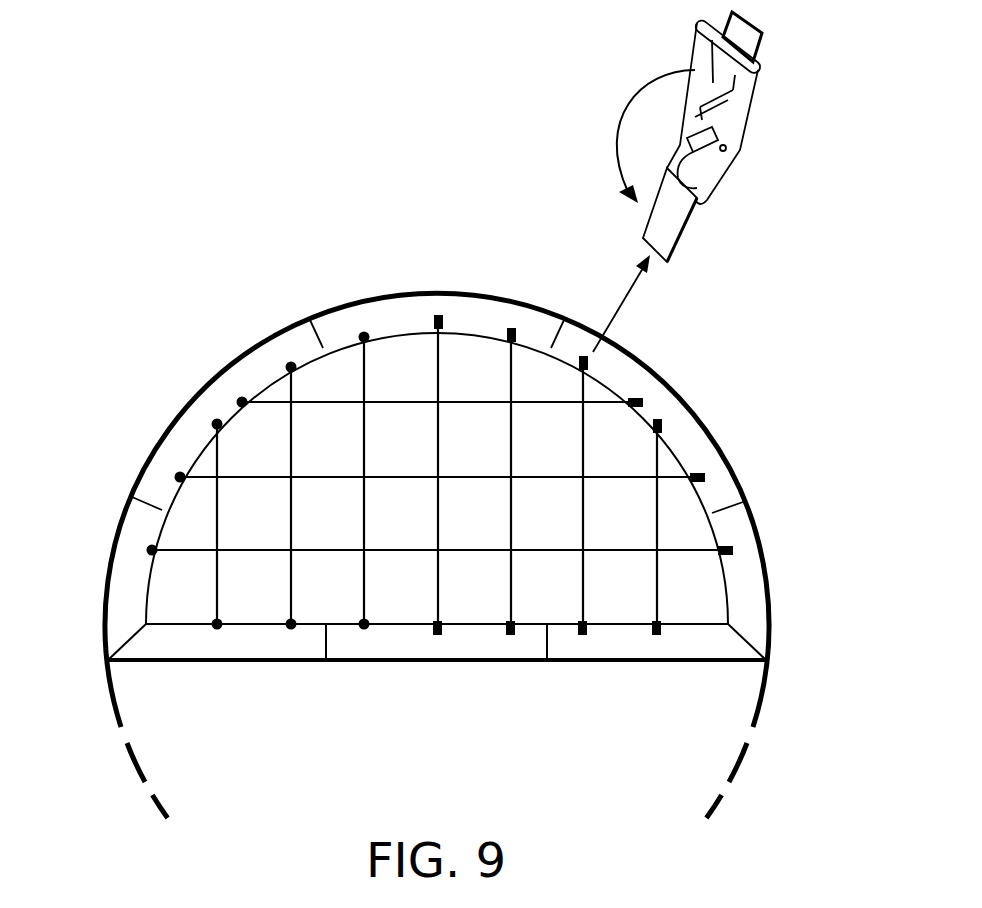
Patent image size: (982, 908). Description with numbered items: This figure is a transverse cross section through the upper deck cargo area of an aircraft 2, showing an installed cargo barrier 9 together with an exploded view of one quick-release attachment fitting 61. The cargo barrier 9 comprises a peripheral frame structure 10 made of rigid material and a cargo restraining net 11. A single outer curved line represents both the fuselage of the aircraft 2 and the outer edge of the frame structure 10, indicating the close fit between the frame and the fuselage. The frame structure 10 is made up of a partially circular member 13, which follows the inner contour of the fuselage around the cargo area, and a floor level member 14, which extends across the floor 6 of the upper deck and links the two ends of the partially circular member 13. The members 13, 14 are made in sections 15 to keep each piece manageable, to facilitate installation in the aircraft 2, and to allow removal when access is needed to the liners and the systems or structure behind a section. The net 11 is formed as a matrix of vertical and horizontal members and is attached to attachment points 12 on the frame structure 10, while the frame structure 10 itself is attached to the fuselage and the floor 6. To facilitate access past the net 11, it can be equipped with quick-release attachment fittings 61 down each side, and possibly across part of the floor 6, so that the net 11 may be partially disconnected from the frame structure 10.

The aircraft 2 is at (767, 678).
The floor 6 is at (188, 662).
The cargo barrier 9 is at (118, 468).
The frame structure 10 is at (120, 593).
The cargo restraining net 11 is at (398, 400).
The attachment points 12 is at (217, 420).
The partially circular member 13 is at (695, 430).
The floor level member 14 is at (280, 647).
The sections 15 is at (747, 580).
The quick-release attachment fitting 61 is at (677, 245).